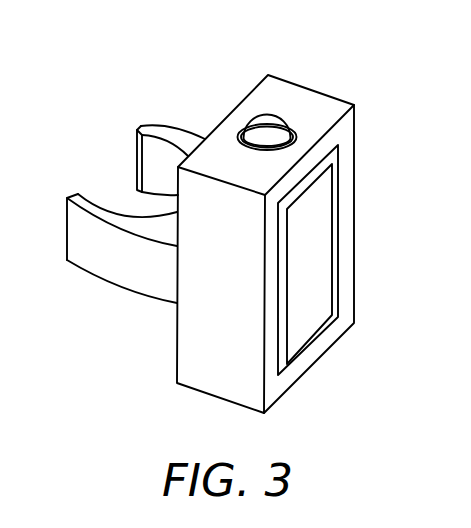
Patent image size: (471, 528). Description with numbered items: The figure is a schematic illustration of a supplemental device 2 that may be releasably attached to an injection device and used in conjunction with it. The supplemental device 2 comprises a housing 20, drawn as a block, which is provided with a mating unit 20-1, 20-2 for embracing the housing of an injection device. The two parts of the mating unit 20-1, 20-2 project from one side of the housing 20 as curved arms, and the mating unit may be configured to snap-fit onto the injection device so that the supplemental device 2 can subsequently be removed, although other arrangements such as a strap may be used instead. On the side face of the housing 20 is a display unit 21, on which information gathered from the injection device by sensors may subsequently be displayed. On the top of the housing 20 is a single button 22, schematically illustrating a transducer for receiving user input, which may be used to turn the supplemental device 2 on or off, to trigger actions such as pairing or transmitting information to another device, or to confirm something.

The supplemental device 2 is at (362, 76).
The housing 20 is at (220, 385).
The mating unit 20-1 is at (78, 193).
The mating unit 20-2 is at (144, 128).
The display unit 21 is at (323, 230).
The button 22 is at (268, 120).